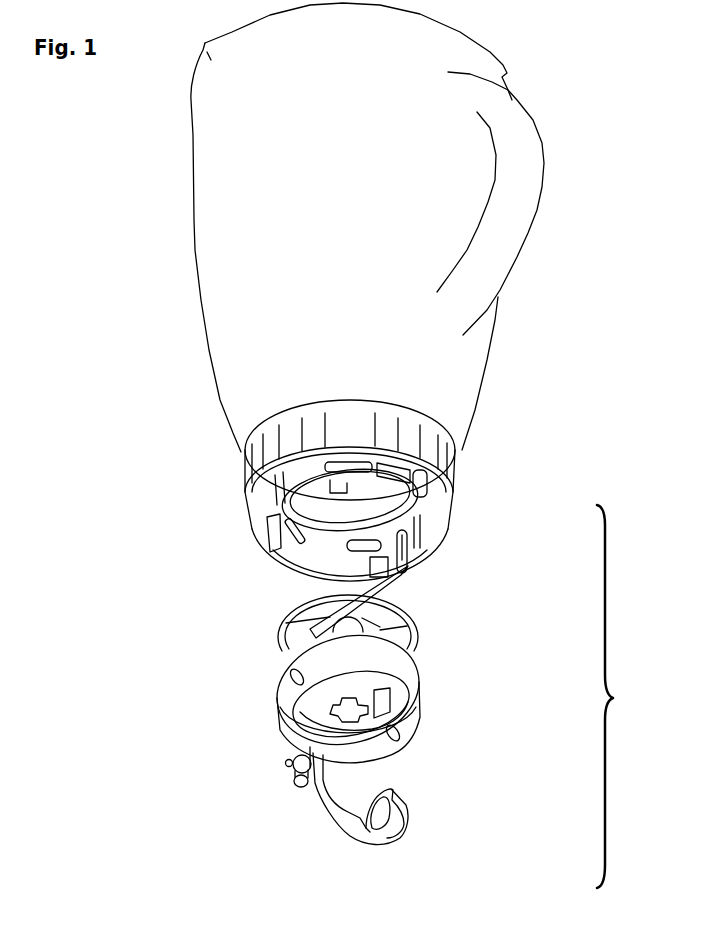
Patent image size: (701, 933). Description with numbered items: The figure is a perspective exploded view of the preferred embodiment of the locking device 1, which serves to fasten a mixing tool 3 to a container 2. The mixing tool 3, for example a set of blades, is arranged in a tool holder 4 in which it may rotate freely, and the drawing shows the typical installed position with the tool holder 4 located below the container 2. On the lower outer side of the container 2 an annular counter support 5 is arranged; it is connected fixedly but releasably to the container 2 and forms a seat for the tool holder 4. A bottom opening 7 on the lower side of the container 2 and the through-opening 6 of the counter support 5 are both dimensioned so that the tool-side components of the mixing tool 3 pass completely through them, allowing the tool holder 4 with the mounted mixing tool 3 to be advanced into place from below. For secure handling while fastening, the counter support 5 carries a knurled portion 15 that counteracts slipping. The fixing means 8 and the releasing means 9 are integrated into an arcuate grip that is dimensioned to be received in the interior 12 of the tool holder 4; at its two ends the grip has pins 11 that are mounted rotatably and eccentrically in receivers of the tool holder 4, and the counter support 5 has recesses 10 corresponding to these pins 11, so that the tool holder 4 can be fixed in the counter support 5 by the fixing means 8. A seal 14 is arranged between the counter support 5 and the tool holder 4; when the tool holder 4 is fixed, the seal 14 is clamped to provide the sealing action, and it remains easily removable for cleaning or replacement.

The locking device 1 is at (616, 696).
The container 2 is at (243, 212).
The mixing tool 3 is at (387, 588).
The tool holder 4 is at (288, 694).
The counter support 5 is at (265, 535).
The through-opening 6 is at (313, 542).
The bottom opening 7 is at (335, 512).
The fixing means 8 is at (348, 823).
The releasing means 9 is at (385, 813).
The recesses 10 is at (393, 555).
The pins 11 is at (286, 763).
The interior 12 is at (398, 700).
The seal 14 is at (288, 623).
The knurled portion 15 is at (433, 442).